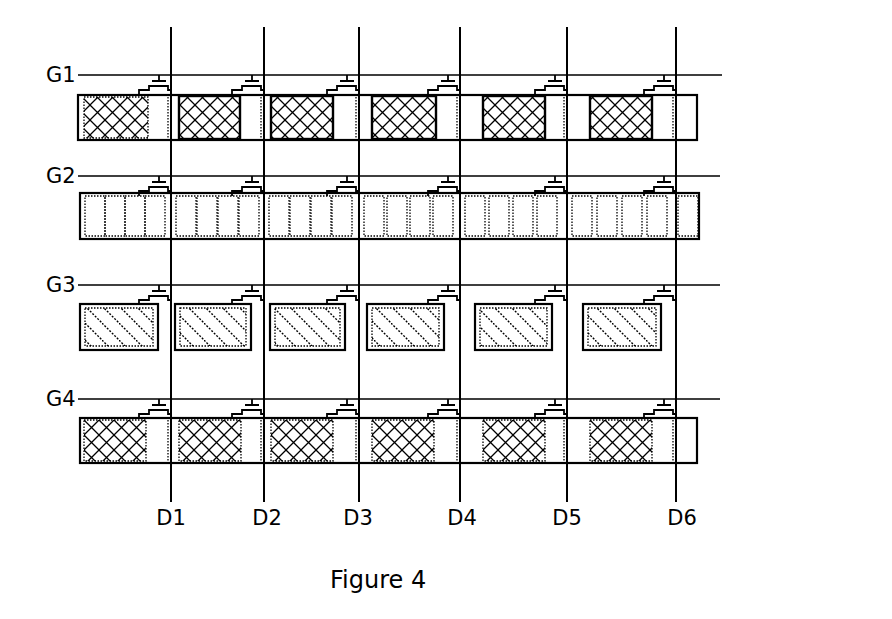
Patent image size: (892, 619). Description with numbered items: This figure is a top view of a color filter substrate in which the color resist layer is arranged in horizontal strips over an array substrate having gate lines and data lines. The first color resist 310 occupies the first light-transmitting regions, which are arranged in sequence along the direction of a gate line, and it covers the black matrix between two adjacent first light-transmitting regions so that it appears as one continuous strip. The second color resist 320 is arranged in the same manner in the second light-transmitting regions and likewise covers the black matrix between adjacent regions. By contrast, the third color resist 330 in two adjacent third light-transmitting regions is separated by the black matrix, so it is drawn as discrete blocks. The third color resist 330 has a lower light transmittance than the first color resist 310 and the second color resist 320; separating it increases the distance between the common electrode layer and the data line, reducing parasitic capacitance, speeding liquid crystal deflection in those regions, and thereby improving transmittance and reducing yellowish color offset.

The first color resist 310 is at (697, 112).
The second color resist 320 is at (699, 222).
The third color resist 330 is at (660, 340).